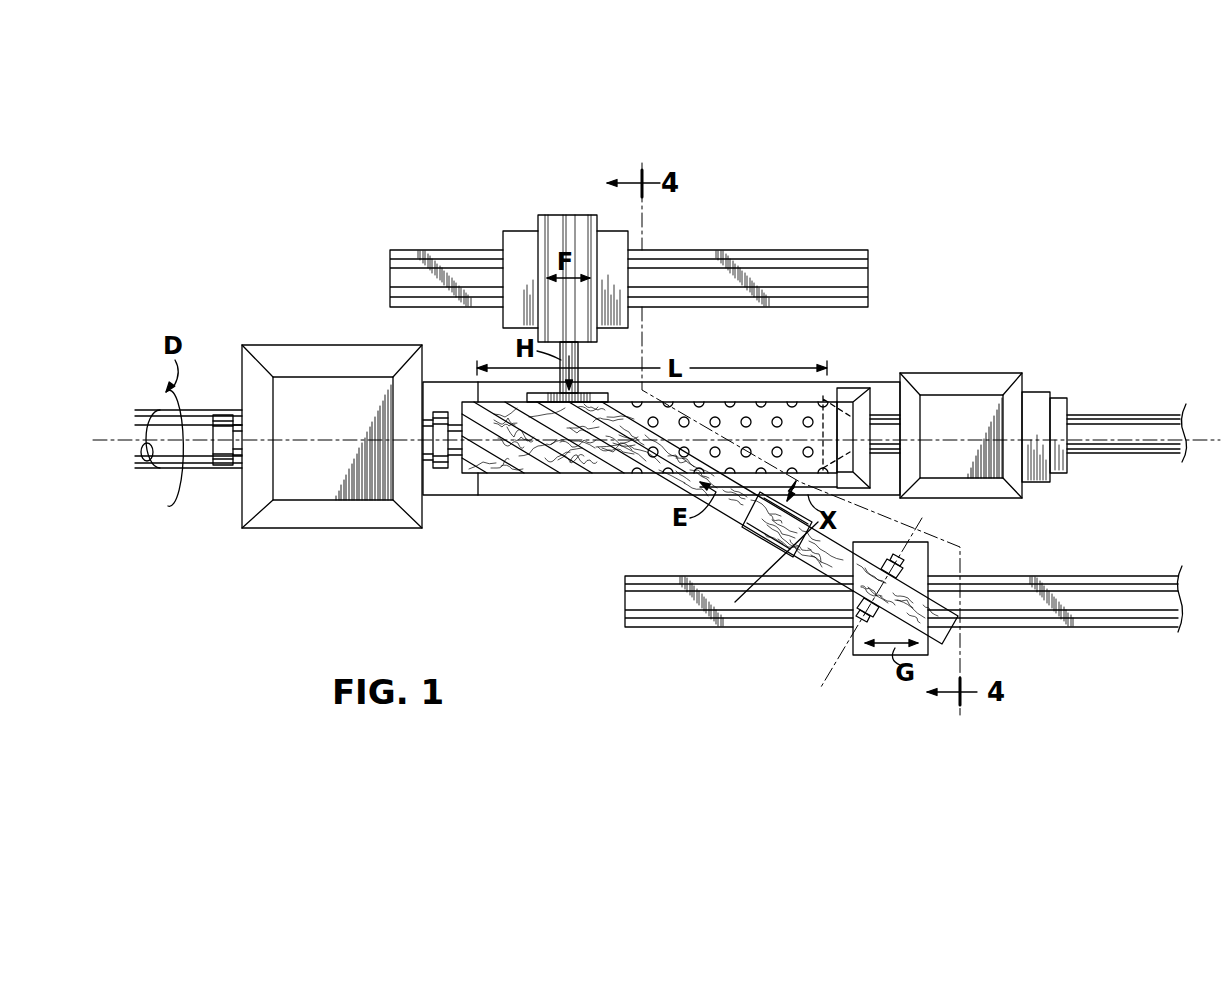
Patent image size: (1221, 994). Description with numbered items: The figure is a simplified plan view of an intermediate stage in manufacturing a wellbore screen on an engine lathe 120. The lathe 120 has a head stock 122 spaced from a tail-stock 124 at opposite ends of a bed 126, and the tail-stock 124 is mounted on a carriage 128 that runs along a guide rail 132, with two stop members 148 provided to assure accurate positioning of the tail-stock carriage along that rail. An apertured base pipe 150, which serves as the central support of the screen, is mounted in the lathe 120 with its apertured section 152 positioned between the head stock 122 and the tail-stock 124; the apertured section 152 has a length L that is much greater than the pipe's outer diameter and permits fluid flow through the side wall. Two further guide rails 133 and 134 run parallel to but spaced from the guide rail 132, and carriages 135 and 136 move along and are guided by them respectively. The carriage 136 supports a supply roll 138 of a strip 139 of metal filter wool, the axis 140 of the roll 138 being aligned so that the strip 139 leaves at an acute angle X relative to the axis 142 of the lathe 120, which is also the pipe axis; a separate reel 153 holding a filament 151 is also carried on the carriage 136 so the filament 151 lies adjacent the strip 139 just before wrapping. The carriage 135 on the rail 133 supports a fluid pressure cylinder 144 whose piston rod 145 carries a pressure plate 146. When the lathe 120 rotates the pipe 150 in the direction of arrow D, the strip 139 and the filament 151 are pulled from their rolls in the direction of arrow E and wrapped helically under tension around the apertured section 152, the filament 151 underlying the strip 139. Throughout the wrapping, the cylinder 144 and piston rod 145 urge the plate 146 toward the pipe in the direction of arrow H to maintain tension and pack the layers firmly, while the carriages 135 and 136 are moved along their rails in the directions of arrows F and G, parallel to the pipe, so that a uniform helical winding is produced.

The engine lathe 120 is at (716, 346).
The head stock 122 is at (307, 517).
The tail-stock 124 is at (957, 387).
The bed 126 is at (440, 486).
The carriage 128 is at (1033, 400).
The guide rail 132 is at (1088, 452).
The guide rail 133 is at (827, 257).
The guide rail 134 is at (803, 622).
The carriage 135 is at (520, 242).
The carriage 136 is at (918, 560).
The supply roll 138 is at (960, 580).
The strip of metal filter wool 139 is at (735, 602).
The axis of roll 140 is at (843, 690).
The axis of lathe 142 is at (108, 426).
The fluid pressure cylinder 144 is at (556, 220).
The piston rod 145 is at (581, 358).
The pressure plate 146 is at (538, 395).
The stop members 148 is at (822, 400).
The apertured base pipe 150 is at (206, 462).
The filament 151 is at (653, 470).
The apertured section 152 is at (753, 397).
The reel 153 is at (750, 523).